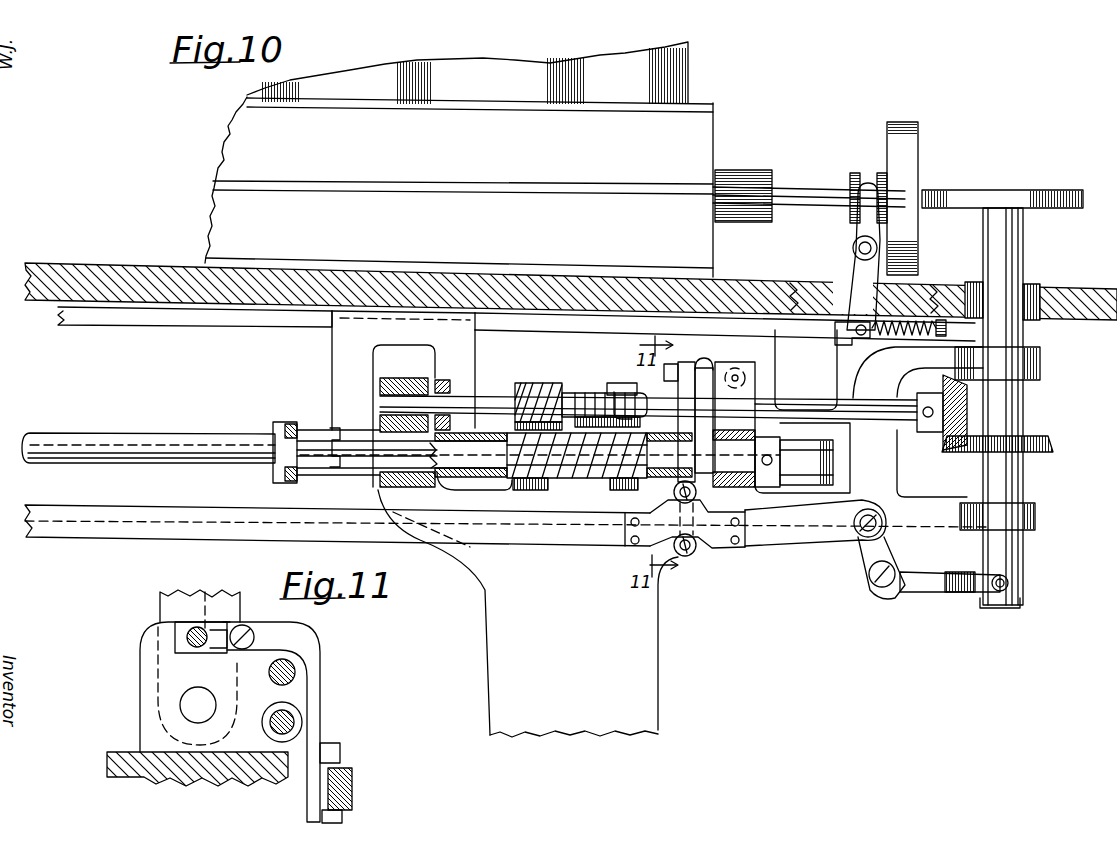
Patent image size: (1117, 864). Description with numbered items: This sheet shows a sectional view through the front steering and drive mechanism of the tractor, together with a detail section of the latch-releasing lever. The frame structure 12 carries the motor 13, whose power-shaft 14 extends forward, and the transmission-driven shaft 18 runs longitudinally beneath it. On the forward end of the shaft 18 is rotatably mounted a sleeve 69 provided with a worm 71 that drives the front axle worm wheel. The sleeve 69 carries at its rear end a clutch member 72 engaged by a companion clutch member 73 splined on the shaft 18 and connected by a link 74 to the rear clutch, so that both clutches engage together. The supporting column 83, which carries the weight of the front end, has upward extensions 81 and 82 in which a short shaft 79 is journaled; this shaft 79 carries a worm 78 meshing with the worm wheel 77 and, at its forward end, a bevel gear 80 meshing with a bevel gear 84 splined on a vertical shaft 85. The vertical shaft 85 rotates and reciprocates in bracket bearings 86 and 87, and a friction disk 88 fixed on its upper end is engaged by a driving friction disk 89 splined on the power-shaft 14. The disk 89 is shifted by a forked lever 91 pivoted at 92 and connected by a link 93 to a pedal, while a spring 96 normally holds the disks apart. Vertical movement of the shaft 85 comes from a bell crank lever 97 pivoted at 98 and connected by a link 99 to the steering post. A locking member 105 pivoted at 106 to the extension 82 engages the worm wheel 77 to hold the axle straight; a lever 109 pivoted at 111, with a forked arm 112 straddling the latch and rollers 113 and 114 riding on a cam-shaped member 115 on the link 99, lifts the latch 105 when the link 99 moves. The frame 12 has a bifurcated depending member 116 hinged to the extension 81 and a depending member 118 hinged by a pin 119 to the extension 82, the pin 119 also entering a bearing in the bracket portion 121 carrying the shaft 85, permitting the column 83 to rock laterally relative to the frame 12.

In FIG. 10, the frame structure 12 is at (1078, 293).
In FIG. 10, the motor 13 is at (690, 81).
In FIG. 10, the power-shaft 14 is at (794, 190).
In FIG. 10, the shaft 18 is at (105, 434).
In FIG. 11, the shaft 18 is at (303, 717).
In FIG. 10, the sleeve 69 is at (443, 476).
In FIG. 11, the sleeve 69 is at (302, 726).
In FIG. 10, the worm 71 is at (560, 482).
In FIG. 10, the clutch member 72 is at (355, 476).
In FIG. 10, the companion clutch member 73 is at (312, 424).
In FIG. 10, the link 74 is at (284, 485).
In FIG. 10, the worm wheel 77 is at (581, 392).
In FIG. 10, the worm 78 is at (536, 384).
In FIG. 10, the shaft 79 is at (486, 400).
In FIG. 11, the shaft 79 is at (296, 672).
In FIG. 10, the bevel gear 80 is at (940, 445).
In FIG. 10, the upward extension 81 is at (402, 379).
In FIG. 10, the upward extension 82 is at (747, 364).
In FIG. 11, the upward extension 82 is at (138, 683).
In FIG. 10, the supporting column 83 is at (652, 657).
In FIG. 11, the supporting column 83 is at (138, 772).
In FIG. 10, the bevel gear 84 is at (1055, 440).
In FIG. 10, the vertical shaft 85 is at (1023, 404).
In FIG. 10, the bracket bearing 86 is at (1035, 518).
In FIG. 10, the bracket bearing 87 is at (1040, 365).
In FIG. 10, the friction disk 88 is at (1083, 205).
In FIG. 10, the driving friction disk 89 is at (918, 143).
In FIG. 10, the forked lever 91 is at (858, 212).
In FIG. 10, the pivot 92 is at (852, 248).
In FIG. 10, the link 93 is at (160, 313).
In FIG. 10, the spring 96 is at (866, 336).
In FIG. 10, the bell crank lever 97 is at (922, 588).
In FIG. 10, the pivot 98 is at (872, 583).
In FIG. 10, the link 99 is at (775, 540).
In FIG. 10, the locking member 105 is at (626, 380).
In FIG. 11, the locking member 105 is at (185, 635).
In FIG. 10, the pivot 106 is at (697, 360).
In FIG. 10, the lever 109 is at (700, 406).
In FIG. 11, the lever 109 is at (312, 648).
In FIG. 11, the pivot 111 is at (247, 626).
In FIG. 11, the fork 112 is at (205, 592).
In FIG. 10, the roller 113 is at (674, 494).
In FIG. 11, the roller 113 is at (342, 748).
In FIG. 10, the roller 114 is at (683, 557).
In FIG. 11, the roller 114 is at (345, 816).
In FIG. 10, the cam-shaped member 115 is at (705, 542).
In FIG. 11, the cam-shaped member 115 is at (355, 782).
In FIG. 10, the bifurcated depending member 116 is at (345, 351).
In FIG. 10, the depending member 118 is at (806, 370).
In FIG. 11, the depending member 118 is at (168, 596).
In FIG. 10, the hinge pin 119 is at (848, 440).
In FIG. 11, the hinge pin 119 is at (198, 705).
In FIG. 10, the bracket portion 121 is at (918, 372).